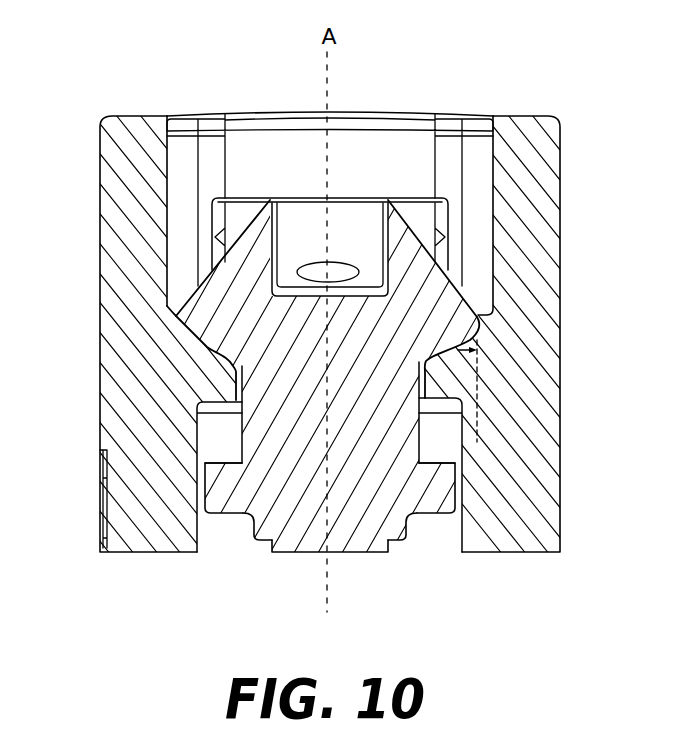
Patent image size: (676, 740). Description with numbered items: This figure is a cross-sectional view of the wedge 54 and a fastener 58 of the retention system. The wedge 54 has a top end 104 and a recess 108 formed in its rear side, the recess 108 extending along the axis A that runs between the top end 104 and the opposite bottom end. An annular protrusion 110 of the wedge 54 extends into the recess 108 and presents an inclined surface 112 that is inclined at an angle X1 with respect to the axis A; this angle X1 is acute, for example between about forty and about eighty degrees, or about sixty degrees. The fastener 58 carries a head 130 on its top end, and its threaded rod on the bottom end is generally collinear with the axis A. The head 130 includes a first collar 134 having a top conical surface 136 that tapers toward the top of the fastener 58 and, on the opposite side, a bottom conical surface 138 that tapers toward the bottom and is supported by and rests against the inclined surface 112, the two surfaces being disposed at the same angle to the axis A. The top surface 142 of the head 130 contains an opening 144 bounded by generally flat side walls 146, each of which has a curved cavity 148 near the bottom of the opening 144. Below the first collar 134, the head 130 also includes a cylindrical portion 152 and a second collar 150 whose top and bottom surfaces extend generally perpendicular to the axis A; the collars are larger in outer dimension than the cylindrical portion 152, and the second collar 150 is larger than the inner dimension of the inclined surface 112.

The wedge 54 is at (584, 167).
The fastener 58 is at (412, 540).
The top end 104 is at (532, 116).
The recess 108 is at (212, 432).
The annular protrusion 110 is at (232, 380).
The inclined surface 112 is at (200, 340).
The head 130 is at (244, 193).
The first collar 134 is at (176, 316).
The top conical surface 136 is at (182, 314).
The bottom conical surface 138 is at (226, 343).
The top surface 142 is at (412, 198).
The opening 144 is at (333, 210).
The side wall 146 is at (290, 223).
The cavity 148 is at (332, 262).
The second collar 150 is at (225, 518).
The cylindrical portion 152 is at (419, 432).
The angle X1 is at (432, 355).